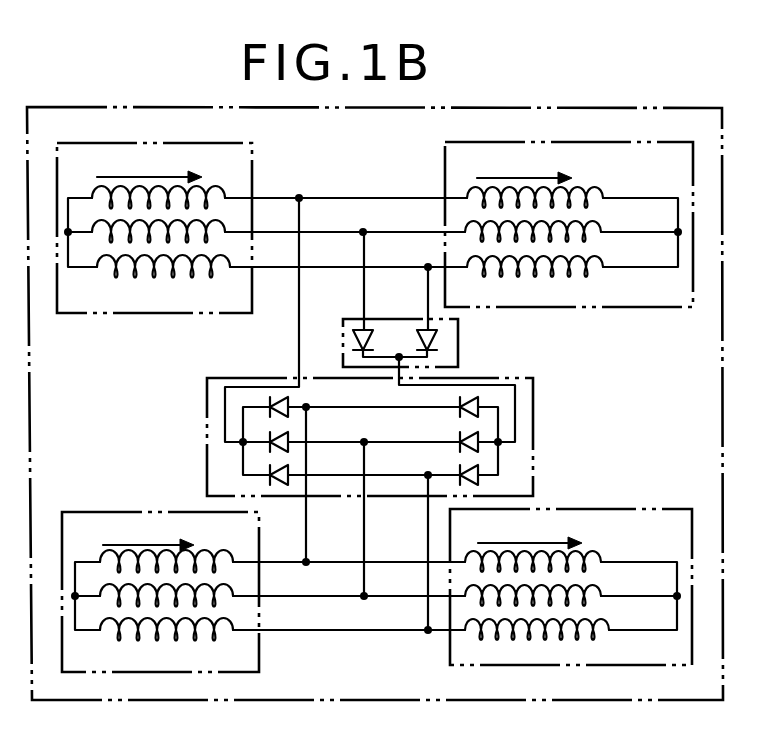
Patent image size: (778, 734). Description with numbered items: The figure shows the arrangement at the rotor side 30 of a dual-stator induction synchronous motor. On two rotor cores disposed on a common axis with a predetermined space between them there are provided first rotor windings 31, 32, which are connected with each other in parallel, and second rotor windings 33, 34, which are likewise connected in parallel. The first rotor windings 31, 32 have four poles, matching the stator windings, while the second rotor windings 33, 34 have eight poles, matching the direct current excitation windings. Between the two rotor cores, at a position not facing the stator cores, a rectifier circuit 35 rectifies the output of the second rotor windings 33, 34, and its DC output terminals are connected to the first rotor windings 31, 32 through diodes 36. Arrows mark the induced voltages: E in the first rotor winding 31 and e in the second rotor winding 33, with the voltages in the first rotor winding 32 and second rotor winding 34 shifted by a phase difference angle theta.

The rotor side arrangement 30 is at (492, 108).
The first rotor winding 31 is at (255, 155).
The first rotor winding 32 is at (445, 162).
The second rotor winding 33 is at (107, 512).
The second rotor winding 34 is at (612, 509).
The rectifier circuit 35 is at (207, 402).
The diodes 36 is at (344, 327).